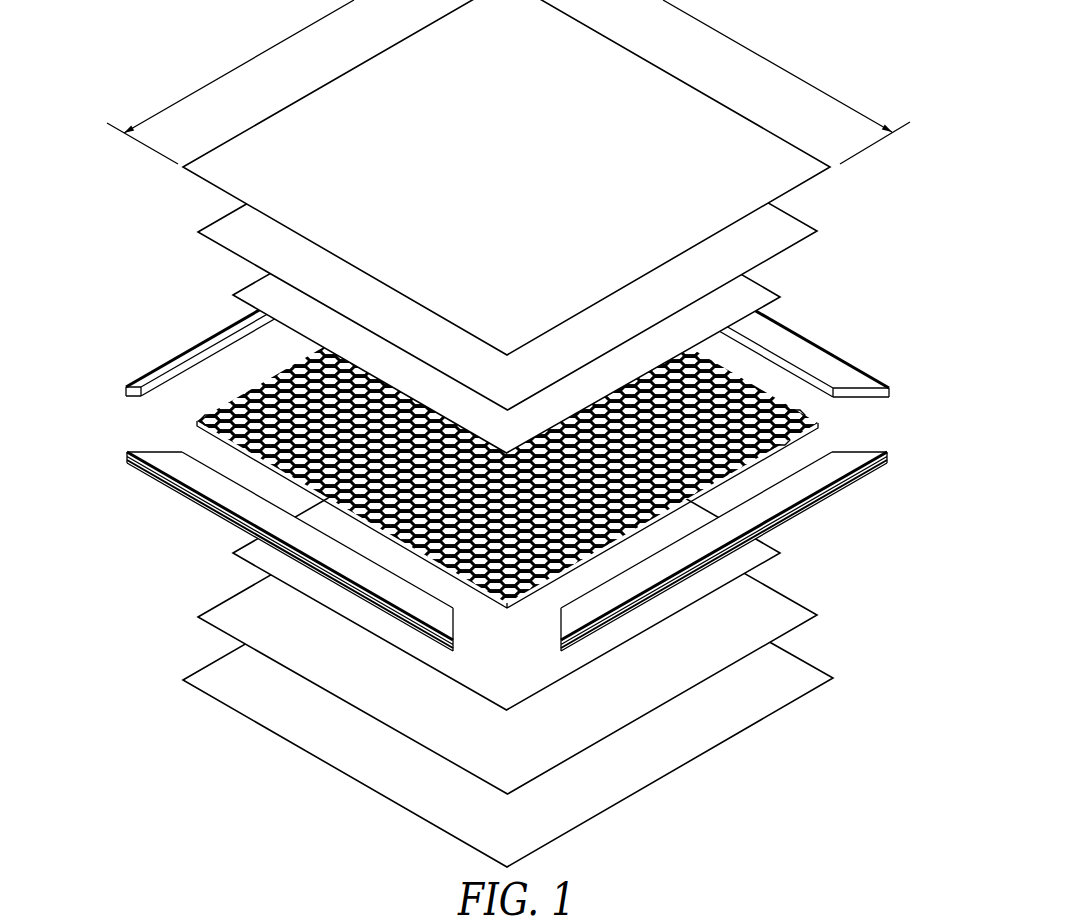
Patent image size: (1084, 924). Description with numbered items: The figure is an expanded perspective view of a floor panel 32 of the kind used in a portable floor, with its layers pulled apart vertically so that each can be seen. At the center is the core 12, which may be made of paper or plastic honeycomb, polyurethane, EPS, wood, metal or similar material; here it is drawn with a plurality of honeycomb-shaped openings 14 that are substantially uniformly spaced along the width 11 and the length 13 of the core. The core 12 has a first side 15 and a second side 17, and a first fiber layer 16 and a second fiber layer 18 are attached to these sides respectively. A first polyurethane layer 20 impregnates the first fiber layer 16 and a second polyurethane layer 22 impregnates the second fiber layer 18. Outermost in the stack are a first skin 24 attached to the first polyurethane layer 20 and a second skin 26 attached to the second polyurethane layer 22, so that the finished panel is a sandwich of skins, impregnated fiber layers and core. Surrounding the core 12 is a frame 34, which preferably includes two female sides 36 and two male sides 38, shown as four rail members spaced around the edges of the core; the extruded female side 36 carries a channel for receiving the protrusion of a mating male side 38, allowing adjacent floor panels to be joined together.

The width 11 is at (714, 28).
The length 13 is at (259, 50).
The second skin 26 is at (731, 101).
The floor panel 32 is at (100, 232).
The second polyurethane layer 22 is at (805, 213).
The second fiber layer 18 is at (775, 283).
The core 12 is at (502, 424).
The openings 14 is at (224, 400).
The second side 17 is at (812, 406).
The first side 15 is at (816, 440).
The frame 34 is at (497, 473).
The female side 36 is at (826, 338).
The male side 38 is at (160, 365).
The first fiber layer 16 is at (779, 562).
The first polyurethane layer 20 is at (807, 632).
The first skin 24 is at (740, 742).